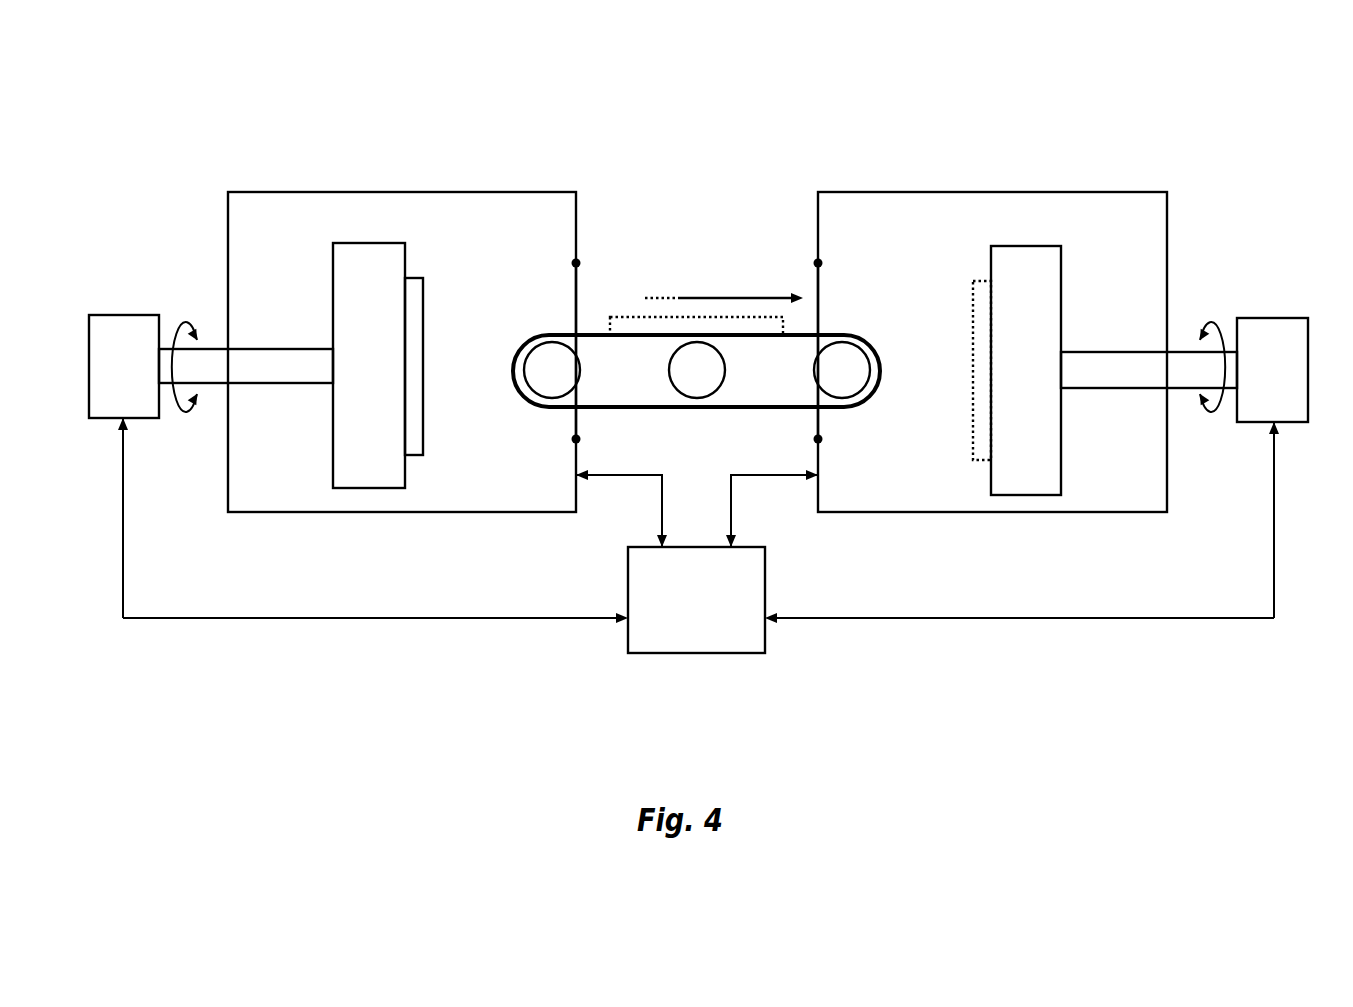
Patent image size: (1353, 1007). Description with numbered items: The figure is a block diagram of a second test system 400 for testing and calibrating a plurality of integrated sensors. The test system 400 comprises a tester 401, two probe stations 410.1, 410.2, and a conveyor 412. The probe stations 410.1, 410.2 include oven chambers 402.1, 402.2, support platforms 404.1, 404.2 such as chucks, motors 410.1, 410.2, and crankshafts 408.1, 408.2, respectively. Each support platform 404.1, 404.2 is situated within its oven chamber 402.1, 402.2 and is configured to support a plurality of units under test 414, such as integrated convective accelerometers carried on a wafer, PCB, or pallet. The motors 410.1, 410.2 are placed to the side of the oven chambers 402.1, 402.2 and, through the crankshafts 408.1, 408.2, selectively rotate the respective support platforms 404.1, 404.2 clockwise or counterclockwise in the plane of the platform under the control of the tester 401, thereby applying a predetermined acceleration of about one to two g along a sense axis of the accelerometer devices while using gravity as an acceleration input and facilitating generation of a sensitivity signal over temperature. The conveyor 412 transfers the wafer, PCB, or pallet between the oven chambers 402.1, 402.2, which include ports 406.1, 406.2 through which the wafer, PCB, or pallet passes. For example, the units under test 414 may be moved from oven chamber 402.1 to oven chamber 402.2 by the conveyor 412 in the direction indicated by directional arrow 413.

The second test system 400 is at (292, 80).
The tester 401 is at (698, 600).
The oven chamber 402.1 is at (447, 369).
The oven chamber 402.2 is at (946, 369).
The support platform 404.1 is at (333, 330).
The support platform 404.2 is at (1061, 331).
The port 406.1 is at (578, 281).
The port 406.2 is at (816, 281).
The crankshaft 408.1 is at (212, 386).
The crankshaft 408.2 is at (1184, 390).
The probe station / motor 410.1 is at (360, 178).
The probe station / motor 410.2 is at (1045, 178).
The conveyor 412 is at (705, 425).
The directional arrow 413 is at (741, 297).
The units under test 414 is at (423, 415).